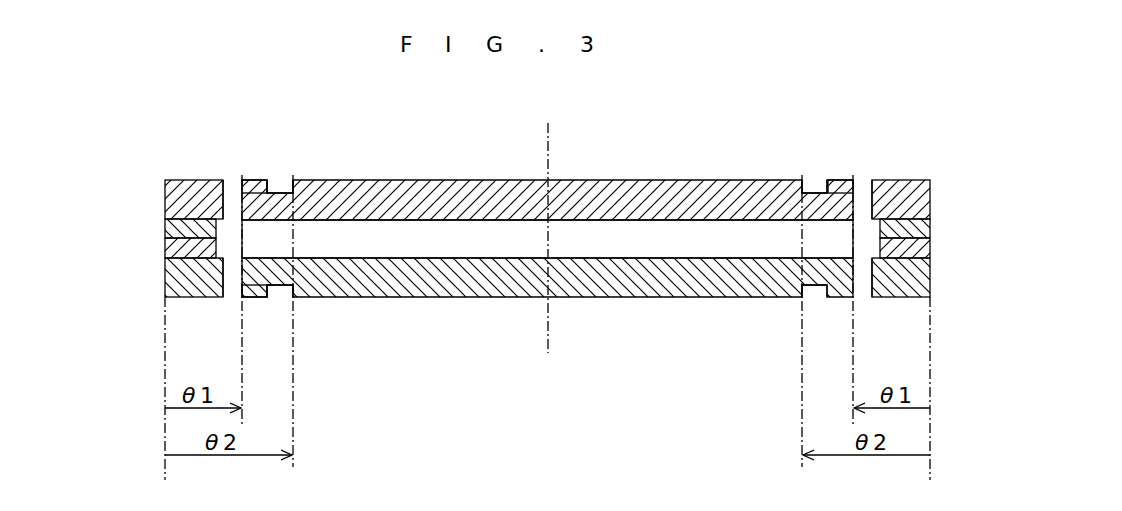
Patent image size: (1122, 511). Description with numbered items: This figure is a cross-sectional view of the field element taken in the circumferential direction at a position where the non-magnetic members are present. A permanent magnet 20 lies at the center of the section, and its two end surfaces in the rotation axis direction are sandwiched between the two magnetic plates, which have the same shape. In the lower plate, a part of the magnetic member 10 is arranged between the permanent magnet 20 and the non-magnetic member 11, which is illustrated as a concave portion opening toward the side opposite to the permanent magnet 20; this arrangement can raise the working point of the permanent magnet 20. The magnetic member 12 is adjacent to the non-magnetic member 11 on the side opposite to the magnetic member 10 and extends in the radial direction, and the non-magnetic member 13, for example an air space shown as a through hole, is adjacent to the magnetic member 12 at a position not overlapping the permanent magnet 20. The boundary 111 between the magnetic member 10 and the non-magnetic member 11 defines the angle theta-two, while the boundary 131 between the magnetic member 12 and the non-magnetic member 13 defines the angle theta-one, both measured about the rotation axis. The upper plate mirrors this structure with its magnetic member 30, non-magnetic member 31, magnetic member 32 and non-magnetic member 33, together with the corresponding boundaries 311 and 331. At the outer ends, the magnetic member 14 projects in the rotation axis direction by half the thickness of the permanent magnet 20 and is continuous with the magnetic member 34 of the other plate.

The magnetic member 10 is at (617, 298).
The non-magnetic member 11 is at (274, 287).
The boundary 111 is at (291, 294).
The magnetic member 12 is at (252, 299).
The non-magnetic member 13 is at (236, 290).
The boundary 131 is at (241, 280).
The magnetic member 14 is at (165, 245).
The permanent magnet 20 is at (488, 240).
The magnetic member 30 is at (615, 180).
The non-magnetic member 31 is at (273, 180).
The boundary 311 is at (289, 184).
The magnetic member 32 is at (250, 180).
The non-magnetic member 33 is at (228, 180).
The boundary 331 is at (232, 182).
The magnetic member 34 is at (165, 232).